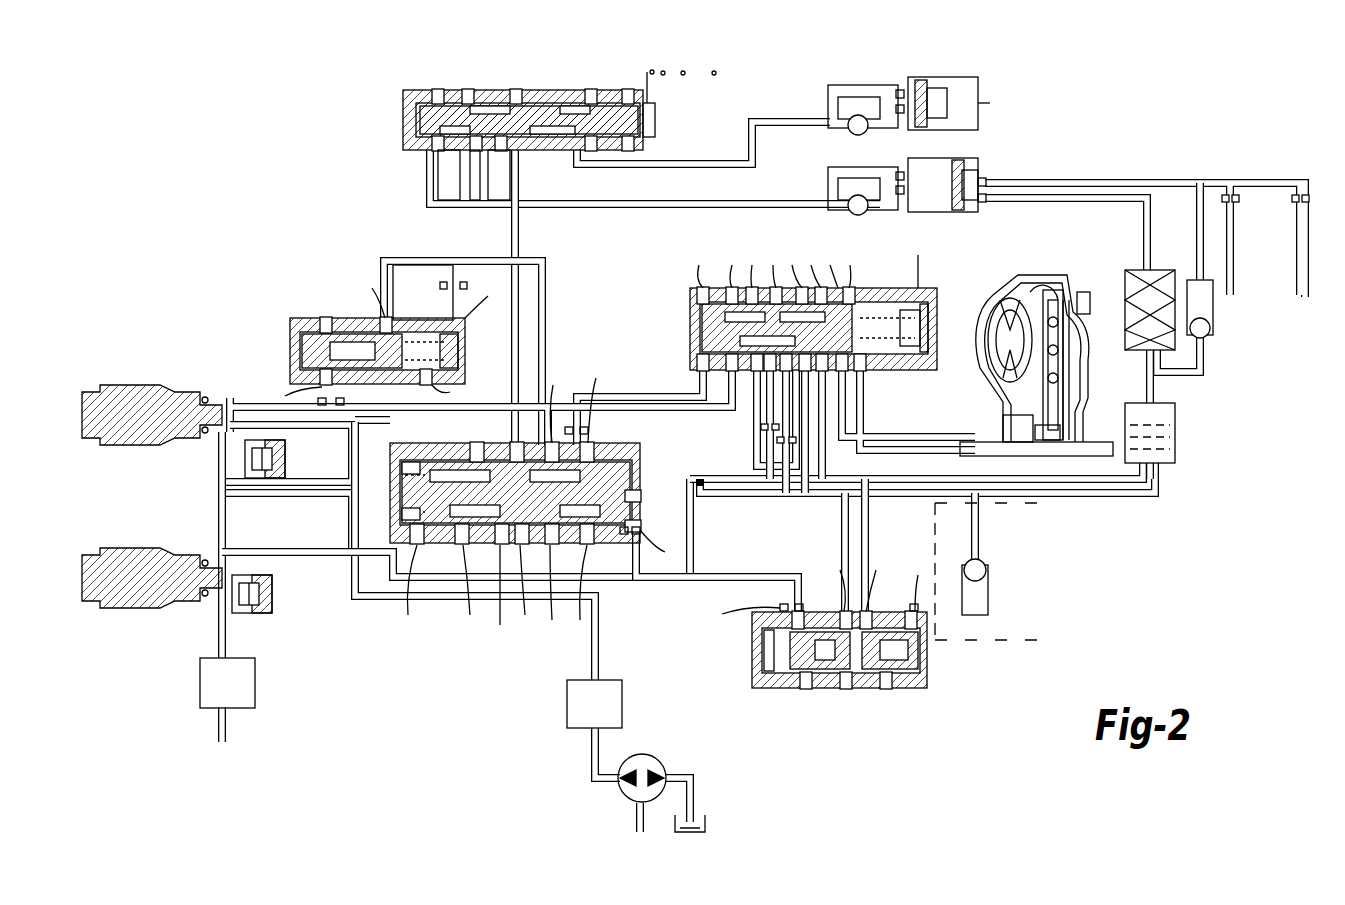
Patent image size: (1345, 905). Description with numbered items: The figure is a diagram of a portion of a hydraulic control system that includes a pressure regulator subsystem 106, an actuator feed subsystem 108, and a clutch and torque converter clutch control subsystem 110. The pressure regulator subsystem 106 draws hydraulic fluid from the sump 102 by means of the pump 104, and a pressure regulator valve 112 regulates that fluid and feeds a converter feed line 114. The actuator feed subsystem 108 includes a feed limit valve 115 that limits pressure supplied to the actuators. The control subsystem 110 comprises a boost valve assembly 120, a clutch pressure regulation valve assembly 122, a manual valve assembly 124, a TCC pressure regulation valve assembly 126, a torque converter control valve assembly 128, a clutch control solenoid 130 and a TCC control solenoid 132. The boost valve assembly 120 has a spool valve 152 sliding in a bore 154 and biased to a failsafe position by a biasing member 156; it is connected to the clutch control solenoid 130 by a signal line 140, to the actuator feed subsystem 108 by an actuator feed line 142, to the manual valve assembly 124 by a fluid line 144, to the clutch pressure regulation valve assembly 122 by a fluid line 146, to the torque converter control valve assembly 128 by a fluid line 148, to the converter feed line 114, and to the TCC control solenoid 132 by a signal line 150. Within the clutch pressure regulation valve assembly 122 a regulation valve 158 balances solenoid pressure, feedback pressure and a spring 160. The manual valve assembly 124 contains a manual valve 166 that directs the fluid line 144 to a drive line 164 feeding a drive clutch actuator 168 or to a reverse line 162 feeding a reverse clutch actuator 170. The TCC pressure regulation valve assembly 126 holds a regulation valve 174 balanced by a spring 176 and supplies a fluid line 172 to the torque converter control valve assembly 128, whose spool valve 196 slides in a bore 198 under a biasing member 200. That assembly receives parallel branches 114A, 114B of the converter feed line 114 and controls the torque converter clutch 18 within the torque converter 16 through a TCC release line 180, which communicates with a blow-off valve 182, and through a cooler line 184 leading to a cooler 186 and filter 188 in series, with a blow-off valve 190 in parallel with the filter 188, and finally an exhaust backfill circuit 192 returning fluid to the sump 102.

The torque converter 16 is at (1050, 334).
The torque converter clutch 18 is at (1078, 365).
The sump 102 is at (700, 823).
The pump 104 is at (655, 755).
The pressure regulator subsystem 106 is at (557, 757).
The actuator feed subsystem 108 is at (187, 707).
The clutch and torque converter clutch control subsystem 110 is at (1113, 77).
The pressure regulator valve 112 is at (615, 718).
The converter feed line 114 is at (600, 655).
The parallel branch of converter feed line 114A is at (762, 432).
The parallel branch of converter feed line 114B is at (787, 445).
The feed limit valve 115 is at (248, 696).
The boost valve assembly 120 is at (511, 496).
The clutch pressure regulation valve assembly 122 is at (355, 333).
The manual valve assembly 124 is at (521, 120).
The TCC pressure regulation valve assembly 126 is at (864, 637).
The torque converter control valve assembly 128 is at (802, 327).
The clutch control solenoid 130 is at (120, 385).
The TCC control solenoid 132 is at (123, 617).
The signal line 140 is at (490, 420).
The actuator feed line 142 is at (372, 600).
The fluid line 144 is at (522, 183).
The fluid line 146 is at (545, 293).
The fluid line 148 is at (640, 398).
The signal line 150 is at (307, 558).
The spool valve 152 is at (600, 483).
The bore 154 is at (400, 516).
The biasing member 156 is at (400, 464).
The regulation valve 158 is at (338, 325).
The spring 160 is at (435, 357).
The reverse line 162 is at (703, 158).
The drive line 164 is at (795, 200).
The manual valve 166 is at (585, 103).
The drive clutch actuator 168 is at (968, 170).
The reverse clutch actuator 170 is at (930, 80).
The fluid line 172 is at (862, 425).
The regulation valve 174 is at (815, 688).
The spring 176 is at (882, 688).
The TCC release line 180 is at (1057, 483).
The blow-off valve 182 is at (988, 590).
The cooler line 184 is at (1132, 497).
The cooler 186 is at (1175, 420).
The filter 188 is at (1112, 275).
The blow-off valve 190 is at (1215, 320).
The exhaust backfill circuit 192 is at (1210, 183).
The spool valve 196 is at (905, 338).
The bore 198 is at (905, 375).
The biasing member 200 is at (920, 352).